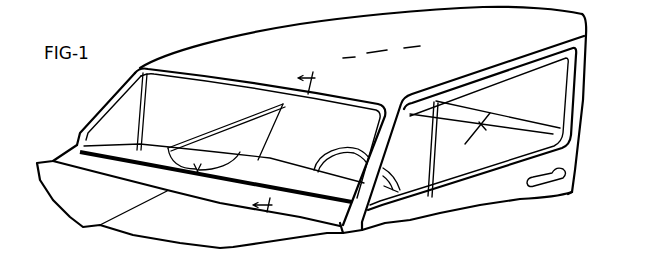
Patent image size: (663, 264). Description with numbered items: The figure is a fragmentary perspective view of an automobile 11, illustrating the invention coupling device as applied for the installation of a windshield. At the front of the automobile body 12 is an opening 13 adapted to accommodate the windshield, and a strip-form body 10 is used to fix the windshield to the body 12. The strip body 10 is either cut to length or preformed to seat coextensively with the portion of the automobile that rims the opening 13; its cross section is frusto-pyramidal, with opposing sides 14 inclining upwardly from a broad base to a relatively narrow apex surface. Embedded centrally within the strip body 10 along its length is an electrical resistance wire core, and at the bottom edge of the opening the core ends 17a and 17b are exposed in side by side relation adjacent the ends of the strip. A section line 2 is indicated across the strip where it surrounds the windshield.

The section line 2- 2 is at (289, 143).
The body 10 is at (224, 82).
The automobile 11 is at (587, 123).
The body 12 is at (454, 60).
The opening 13 is at (109, 100).
The sides 14 is at (281, 97).
The core end 17a is at (168, 148).
The core end 17b is at (240, 152).